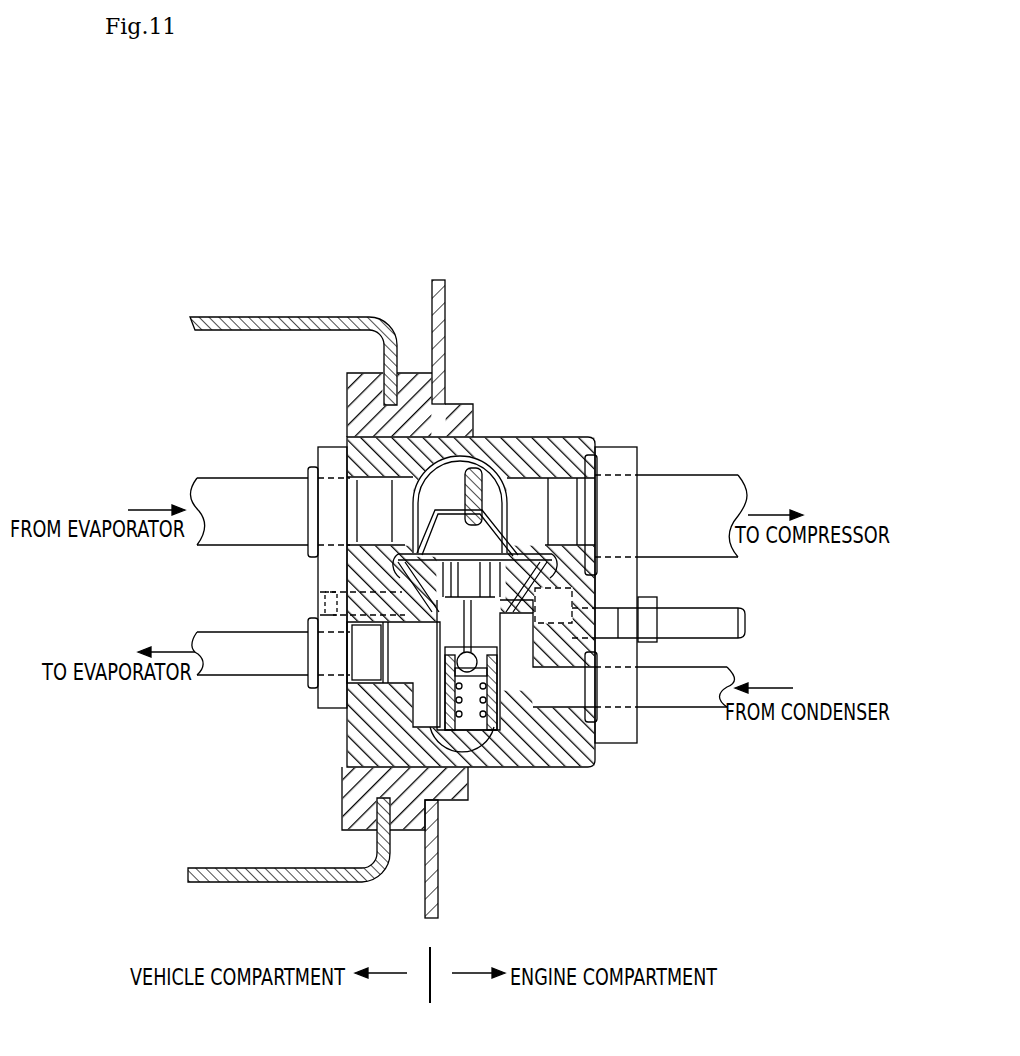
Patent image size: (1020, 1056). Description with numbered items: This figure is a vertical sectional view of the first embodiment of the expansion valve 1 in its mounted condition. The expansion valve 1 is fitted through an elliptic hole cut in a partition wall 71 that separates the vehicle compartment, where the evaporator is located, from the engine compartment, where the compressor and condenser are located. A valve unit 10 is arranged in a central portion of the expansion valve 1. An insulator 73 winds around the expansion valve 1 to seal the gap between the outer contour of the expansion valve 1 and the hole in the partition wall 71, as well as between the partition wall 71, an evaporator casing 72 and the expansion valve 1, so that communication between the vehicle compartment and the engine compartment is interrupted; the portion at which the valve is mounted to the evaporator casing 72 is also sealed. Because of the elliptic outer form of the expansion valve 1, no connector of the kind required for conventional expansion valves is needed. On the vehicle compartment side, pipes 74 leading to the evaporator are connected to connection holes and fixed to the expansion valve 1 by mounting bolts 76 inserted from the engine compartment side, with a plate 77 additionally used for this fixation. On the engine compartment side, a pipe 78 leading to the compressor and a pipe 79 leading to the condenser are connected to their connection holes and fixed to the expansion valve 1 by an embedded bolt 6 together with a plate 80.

The expansion valve 1 is at (572, 437).
The embedded bolt 6 is at (688, 608).
The valve unit 10 is at (481, 497).
The partition wall 71 is at (446, 310).
The evaporator casing 72 is at (296, 318).
The insulator 73 is at (452, 404).
The pipe leading to the evaporator 74 is at (263, 478).
The mounting bolt 76 is at (337, 603).
The plate 77 is at (323, 700).
The pipe leading to the compressor 78 is at (690, 475).
The pipe leading to the condenser 79 is at (690, 707).
The plate 80 is at (612, 743).